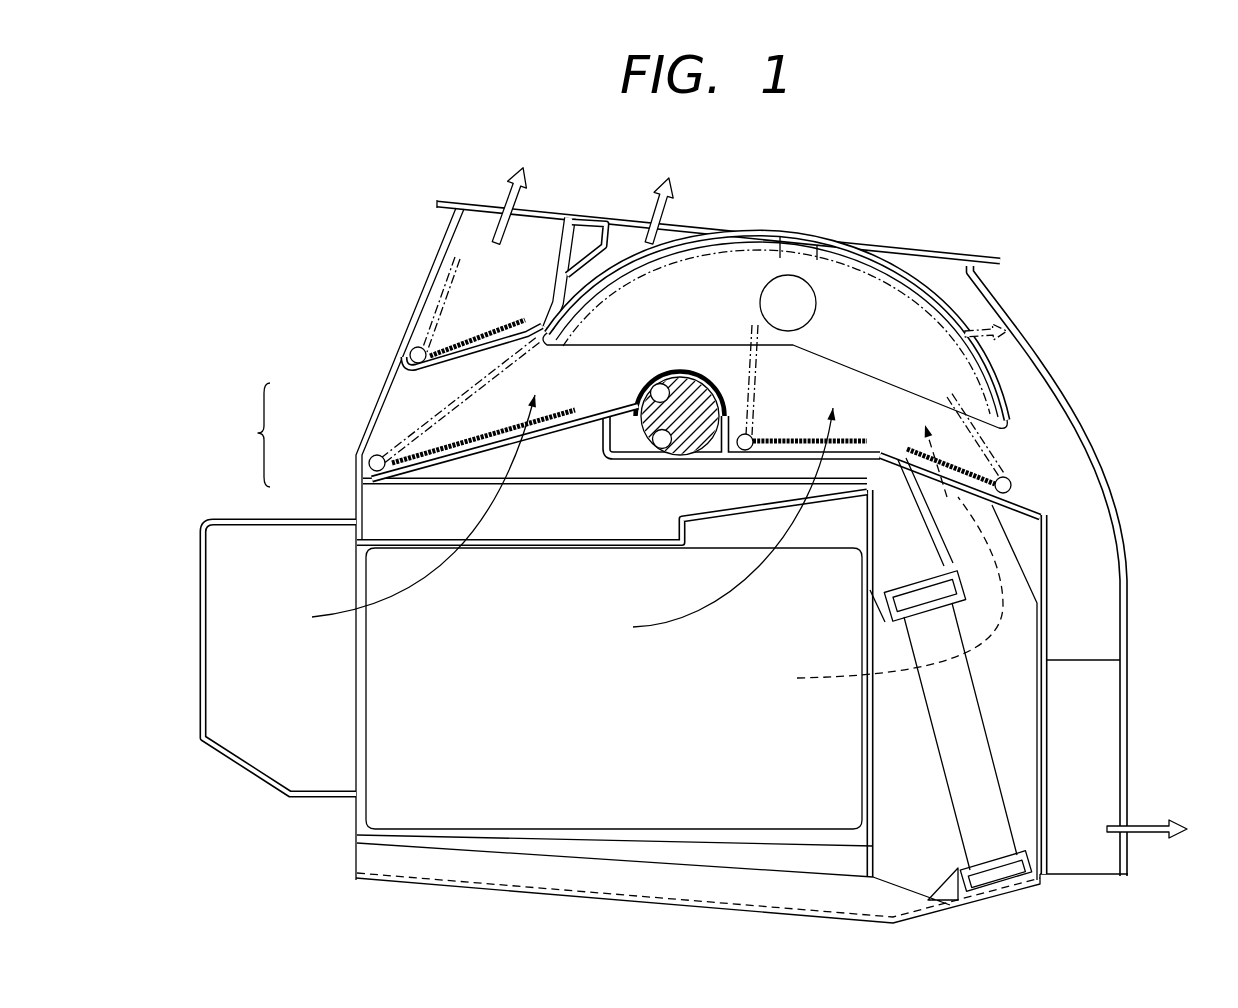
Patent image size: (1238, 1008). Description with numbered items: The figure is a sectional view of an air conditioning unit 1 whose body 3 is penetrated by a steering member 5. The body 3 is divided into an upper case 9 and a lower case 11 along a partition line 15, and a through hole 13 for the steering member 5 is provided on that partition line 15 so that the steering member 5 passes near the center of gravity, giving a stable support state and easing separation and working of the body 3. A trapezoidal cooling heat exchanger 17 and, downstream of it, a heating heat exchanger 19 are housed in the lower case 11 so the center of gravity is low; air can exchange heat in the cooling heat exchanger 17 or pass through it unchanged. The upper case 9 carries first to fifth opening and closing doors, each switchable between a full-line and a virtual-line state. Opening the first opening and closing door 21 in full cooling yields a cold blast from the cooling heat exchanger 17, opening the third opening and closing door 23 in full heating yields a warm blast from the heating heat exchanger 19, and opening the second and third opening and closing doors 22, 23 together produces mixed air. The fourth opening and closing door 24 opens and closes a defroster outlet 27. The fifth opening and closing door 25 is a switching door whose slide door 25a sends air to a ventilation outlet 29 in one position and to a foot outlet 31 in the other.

The air conditioning unit 1 is at (1045, 292).
The body of the air conditioning unit 3 is at (637, 561).
The steering member 5 is at (698, 378).
The upper case 9 is at (358, 420).
The lower case 11 is at (352, 506).
The through hole 13 is at (662, 385).
The partition line 15 is at (592, 410).
The cooling heat exchanger 17 is at (377, 808).
The heating heat exchanger 19 is at (950, 788).
The first opening and closing door 21 is at (477, 433).
The second opening and closing door 22 is at (789, 436).
The third opening and closing door 23 is at (912, 436).
The fourth opening and closing door 24 is at (468, 330).
The fifth opening and closing door 25 is at (906, 280).
The slide door 25a is at (873, 272).
The defroster outlet 27 is at (534, 222).
The ventilation outlet 29 is at (690, 232).
The foot outlet 31 is at (1117, 860).